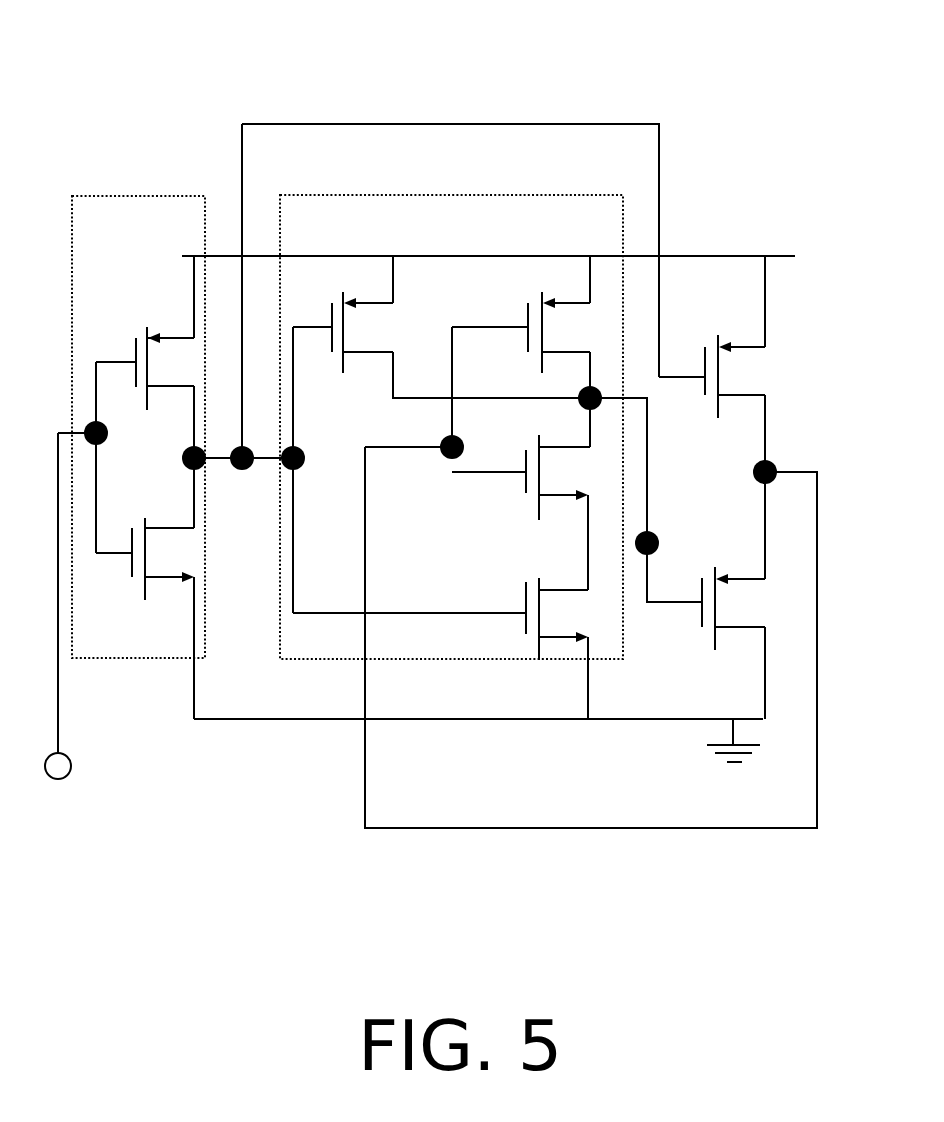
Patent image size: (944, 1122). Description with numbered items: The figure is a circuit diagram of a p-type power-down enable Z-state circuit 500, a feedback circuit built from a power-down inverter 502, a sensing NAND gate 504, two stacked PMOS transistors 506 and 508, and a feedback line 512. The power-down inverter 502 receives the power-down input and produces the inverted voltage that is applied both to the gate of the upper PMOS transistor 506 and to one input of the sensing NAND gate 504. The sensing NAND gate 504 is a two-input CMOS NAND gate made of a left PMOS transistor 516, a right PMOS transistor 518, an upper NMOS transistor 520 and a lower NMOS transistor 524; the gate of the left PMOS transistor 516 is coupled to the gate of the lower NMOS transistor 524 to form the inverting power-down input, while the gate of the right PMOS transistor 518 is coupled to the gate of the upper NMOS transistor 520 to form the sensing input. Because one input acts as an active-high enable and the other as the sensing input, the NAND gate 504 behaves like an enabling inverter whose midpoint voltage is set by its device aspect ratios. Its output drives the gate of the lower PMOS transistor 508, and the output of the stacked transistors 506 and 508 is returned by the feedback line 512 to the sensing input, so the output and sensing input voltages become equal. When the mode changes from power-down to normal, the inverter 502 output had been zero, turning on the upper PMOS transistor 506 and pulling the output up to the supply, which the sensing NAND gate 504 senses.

The p-type power-down enable Z-state circuit 500 is at (477, 37).
The power-down inverter 502 is at (133, 196).
The sensing NAND gate 504 is at (355, 195).
The upper PMOS transistor 506 is at (767, 338).
The lower PMOS transistor 508 is at (780, 578).
The feedback line 512 is at (530, 845).
The left PMOS transistor 516 is at (388, 352).
The right PMOS transistor 518 is at (528, 318).
The upper NMOS transistor 520 is at (527, 465).
The lower NMOS transistor 524 is at (525, 602).